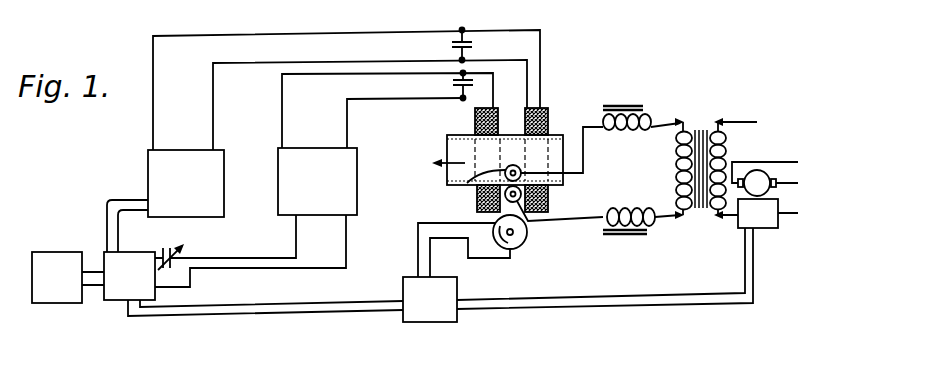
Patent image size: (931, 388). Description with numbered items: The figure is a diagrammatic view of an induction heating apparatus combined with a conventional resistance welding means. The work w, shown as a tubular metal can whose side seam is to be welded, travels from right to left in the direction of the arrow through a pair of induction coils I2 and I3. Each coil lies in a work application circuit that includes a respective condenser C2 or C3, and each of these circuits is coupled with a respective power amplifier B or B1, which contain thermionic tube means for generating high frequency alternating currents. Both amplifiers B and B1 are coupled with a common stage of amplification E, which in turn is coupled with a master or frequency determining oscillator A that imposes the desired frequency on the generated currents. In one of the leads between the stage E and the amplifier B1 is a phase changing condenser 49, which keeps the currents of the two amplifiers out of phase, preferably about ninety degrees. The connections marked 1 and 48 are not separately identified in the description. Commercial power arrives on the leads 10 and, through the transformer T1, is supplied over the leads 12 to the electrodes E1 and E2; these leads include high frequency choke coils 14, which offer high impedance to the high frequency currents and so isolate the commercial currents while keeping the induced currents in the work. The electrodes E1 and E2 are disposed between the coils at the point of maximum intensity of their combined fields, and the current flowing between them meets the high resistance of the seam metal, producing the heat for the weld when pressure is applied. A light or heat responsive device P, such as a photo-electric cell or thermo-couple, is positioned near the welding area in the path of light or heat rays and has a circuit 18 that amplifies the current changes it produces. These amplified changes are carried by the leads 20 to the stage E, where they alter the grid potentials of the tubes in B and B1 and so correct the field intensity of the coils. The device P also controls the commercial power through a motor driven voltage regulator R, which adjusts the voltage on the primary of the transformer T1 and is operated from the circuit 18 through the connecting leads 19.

The conductor 1 is at (312, 58).
The commercial power leads 10 is at (746, 120).
The leads 12 is at (665, 124).
The high frequency choke coils 14 is at (622, 108).
The circuit 18 is at (430, 307).
The connecting leads 19 is at (618, 300).
The leads 20 is at (297, 306).
The conductor 48 is at (128, 178).
The phase changing condenser 49 is at (187, 250).
The master oscillator A is at (68, 277).
The power amplifier B is at (186, 183).
The power amplifier B1 is at (317, 181).
The condenser C2 is at (475, 43).
The condenser C3 is at (452, 86).
The stage of amplification E is at (129, 276).
The electrode E1 is at (477, 197).
The electrode E2 is at (548, 196).
The induction coil I2 is at (540, 107).
The induction coil I3 is at (500, 107).
The light or heat responsive device P is at (524, 240).
The motor driven voltage regulator R is at (765, 218).
The transformer T1 is at (714, 173).
The work w is at (555, 137).